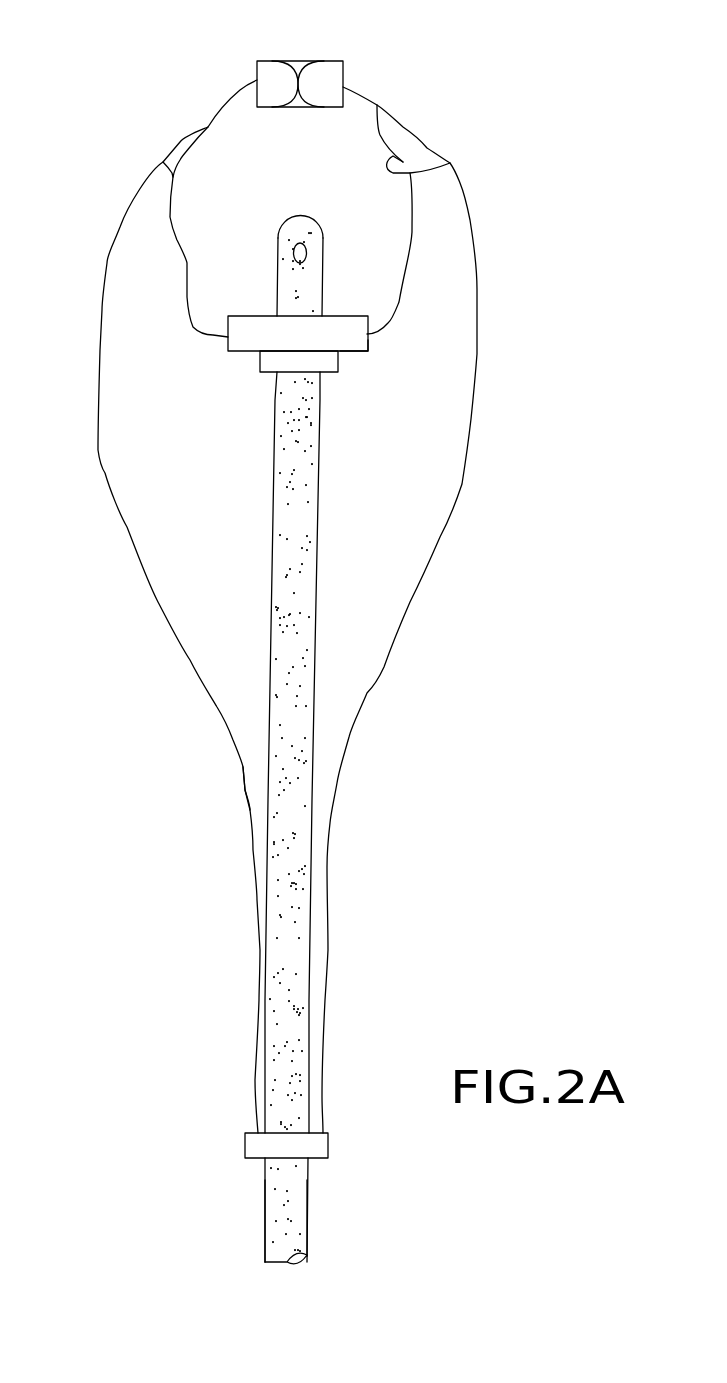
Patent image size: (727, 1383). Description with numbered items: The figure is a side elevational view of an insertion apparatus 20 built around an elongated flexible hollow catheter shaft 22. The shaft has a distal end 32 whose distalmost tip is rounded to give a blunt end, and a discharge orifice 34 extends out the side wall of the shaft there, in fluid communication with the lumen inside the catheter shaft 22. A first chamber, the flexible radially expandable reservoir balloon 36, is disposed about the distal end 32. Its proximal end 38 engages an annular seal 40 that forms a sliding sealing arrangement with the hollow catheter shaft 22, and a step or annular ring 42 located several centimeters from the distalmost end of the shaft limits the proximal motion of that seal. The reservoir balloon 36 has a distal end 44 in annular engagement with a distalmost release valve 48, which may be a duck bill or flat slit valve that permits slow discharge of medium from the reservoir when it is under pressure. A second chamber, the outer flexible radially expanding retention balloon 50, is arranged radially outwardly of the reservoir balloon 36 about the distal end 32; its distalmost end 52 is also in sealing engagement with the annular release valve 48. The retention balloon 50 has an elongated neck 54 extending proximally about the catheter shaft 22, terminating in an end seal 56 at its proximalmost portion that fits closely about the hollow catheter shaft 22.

The insertion apparatus 20 is at (556, 588).
The hollow catheter shaft 22 is at (270, 1222).
The distal end of catheter shaft 32 is at (310, 288).
The discharge orifice 34 is at (293, 256).
The reservoir balloon 36 is at (163, 162).
The proximal end of reservoir balloon 38 is at (202, 339).
The annular seal 40 is at (367, 348).
The annular ring 42 is at (340, 357).
The distal end of reservoir balloon 44 is at (452, 163).
The release valve 48 is at (317, 77).
The retention balloon 50 is at (100, 312).
The distalmost end of retention balloon 52 is at (190, 147).
The elongated neck 54 is at (245, 790).
The end seal 56 is at (325, 1140).